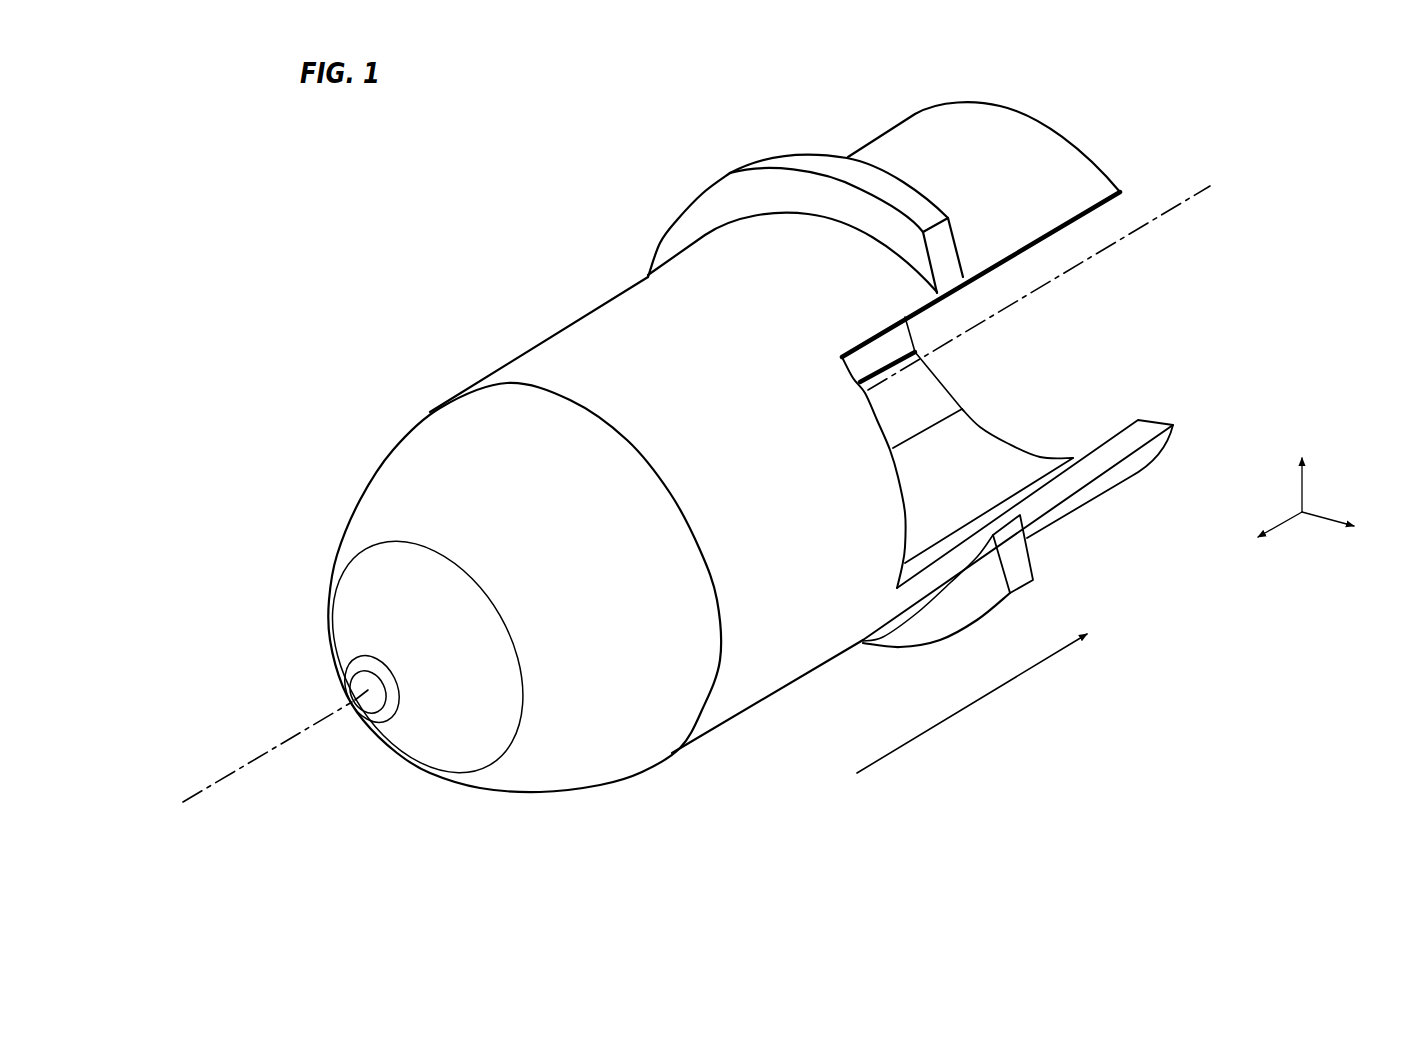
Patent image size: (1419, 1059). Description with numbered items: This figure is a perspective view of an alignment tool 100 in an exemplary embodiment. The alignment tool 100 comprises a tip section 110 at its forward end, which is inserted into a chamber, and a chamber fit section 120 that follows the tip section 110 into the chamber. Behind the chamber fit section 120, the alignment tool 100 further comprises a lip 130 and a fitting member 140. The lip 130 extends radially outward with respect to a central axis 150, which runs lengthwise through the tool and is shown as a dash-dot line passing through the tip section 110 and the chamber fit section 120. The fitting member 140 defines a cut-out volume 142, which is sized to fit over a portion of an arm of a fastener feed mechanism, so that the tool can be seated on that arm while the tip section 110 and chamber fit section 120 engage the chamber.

The alignment tool 100 is at (1268, 718).
The tip section 110 is at (358, 489).
The chamber fit section 120 is at (575, 322).
The lip 130 is at (787, 158).
The fitting member 140 is at (1036, 130).
The cut-out volume 142 is at (1090, 346).
The central axis 150 is at (240, 767).